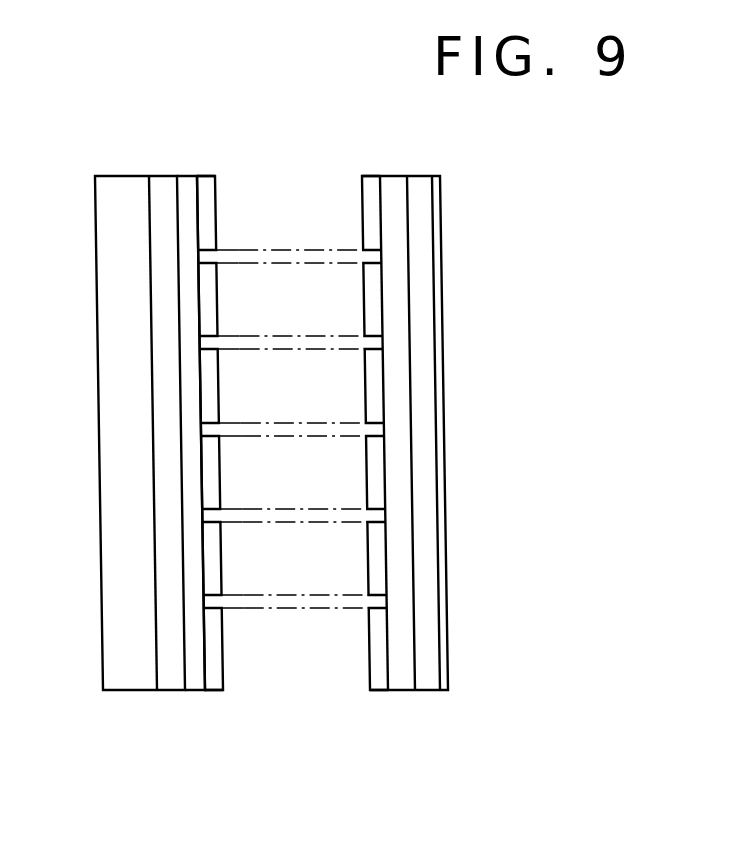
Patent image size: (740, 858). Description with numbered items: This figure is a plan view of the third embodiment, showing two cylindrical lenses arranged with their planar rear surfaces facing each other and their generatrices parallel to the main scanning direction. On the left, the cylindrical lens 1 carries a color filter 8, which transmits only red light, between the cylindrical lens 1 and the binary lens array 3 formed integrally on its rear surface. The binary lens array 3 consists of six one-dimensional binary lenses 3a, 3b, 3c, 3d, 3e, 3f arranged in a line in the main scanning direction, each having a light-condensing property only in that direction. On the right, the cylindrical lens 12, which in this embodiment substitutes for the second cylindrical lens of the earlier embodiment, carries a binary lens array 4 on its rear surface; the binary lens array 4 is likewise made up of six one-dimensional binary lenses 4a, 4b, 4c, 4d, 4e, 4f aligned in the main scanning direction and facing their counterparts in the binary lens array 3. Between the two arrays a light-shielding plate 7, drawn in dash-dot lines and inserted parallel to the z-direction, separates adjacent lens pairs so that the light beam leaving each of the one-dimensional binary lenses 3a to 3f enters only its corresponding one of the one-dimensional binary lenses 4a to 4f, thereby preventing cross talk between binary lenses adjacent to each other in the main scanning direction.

The cylindrical lens 1 is at (160, 190).
The color filter 8 is at (186, 190).
The binary lens array 3 is at (205, 176).
The one-dimensional binary lens 3a is at (206, 638).
The one-dimensional binary lens 3b is at (206, 554).
The one-dimensional binary lens 3c is at (206, 471).
The one-dimensional binary lens 3d is at (206, 388).
The one-dimensional binary lens 3e is at (206, 305).
The one-dimensional binary lens 3f is at (206, 196).
The binary lens array 4 is at (368, 175).
The one-dimensional binary lens 4a is at (372, 663).
The one-dimensional binary lens 4b is at (369, 555).
The one-dimensional binary lens 4c is at (369, 472).
The one-dimensional binary lens 4d is at (369, 389).
The one-dimensional binary lens 4e is at (369, 306).
The one-dimensional binary lens 4f is at (367, 223).
The light-shielding plate 7 is at (261, 249).
The cylindrical lens 12 is at (397, 185).